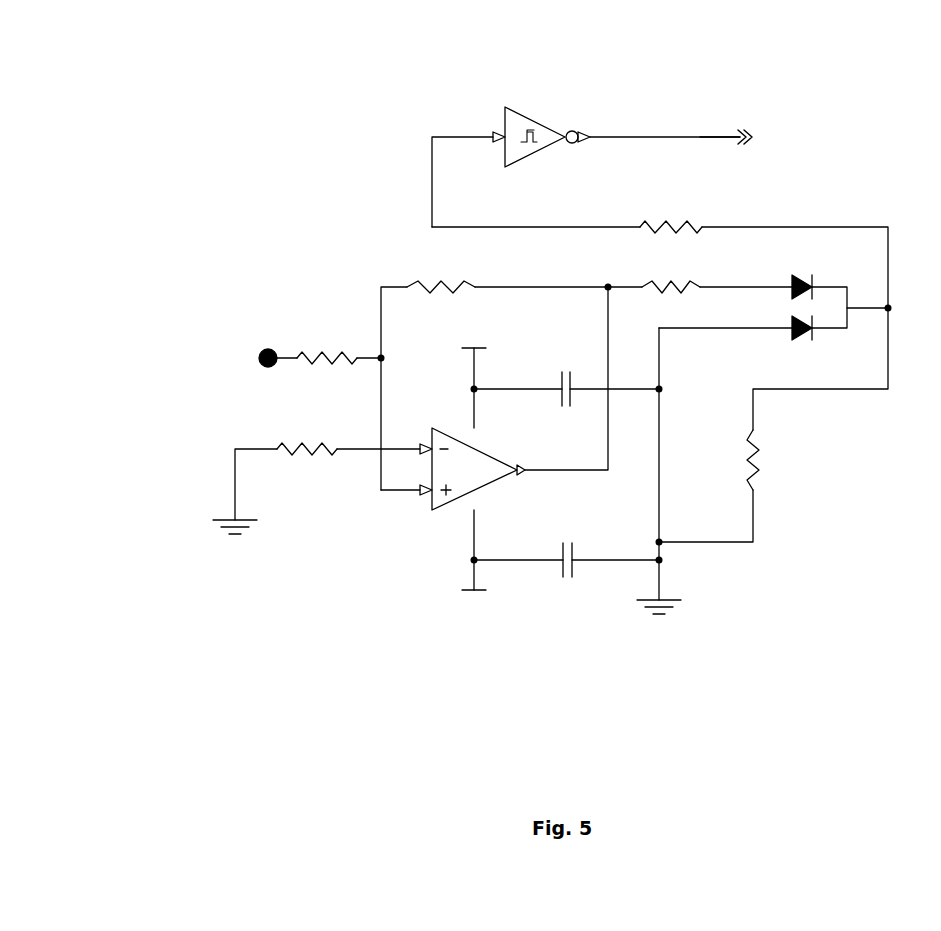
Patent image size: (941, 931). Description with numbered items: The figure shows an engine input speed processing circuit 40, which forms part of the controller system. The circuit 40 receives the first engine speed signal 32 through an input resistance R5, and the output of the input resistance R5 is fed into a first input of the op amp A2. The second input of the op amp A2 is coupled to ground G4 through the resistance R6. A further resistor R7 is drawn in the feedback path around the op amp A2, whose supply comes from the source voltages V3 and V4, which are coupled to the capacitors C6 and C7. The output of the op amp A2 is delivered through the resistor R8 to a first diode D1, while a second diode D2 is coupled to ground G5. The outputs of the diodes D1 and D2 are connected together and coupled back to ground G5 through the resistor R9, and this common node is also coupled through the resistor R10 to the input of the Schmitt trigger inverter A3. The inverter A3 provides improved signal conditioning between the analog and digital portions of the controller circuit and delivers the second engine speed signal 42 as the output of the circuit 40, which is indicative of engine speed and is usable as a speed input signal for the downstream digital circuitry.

The engine input speed processing circuit 40 is at (305, 60).
The first engine speed signal ESS1 32 is at (212, 358).
The output ESS2 42 is at (782, 138).
The op amp A2 is at (472, 469).
The Schmitt trigger inverter A3 is at (547, 130).
The input resistance R5 is at (327, 344).
The resistance R6 is at (307, 436).
The resistor R7 is at (441, 274).
The resistor R8 is at (671, 274).
The resistor R9 is at (767, 460).
The resistor R10 is at (671, 214).
The capacitor C6 is at (560, 374).
The capacitor C7 is at (565, 542).
The first diode D1 is at (798, 274).
The second diode D2 is at (798, 345).
The source voltage V3 is at (473, 335).
The source voltage V4 is at (471, 604).
The ground G4 is at (235, 546).
The ground G5 is at (659, 623).